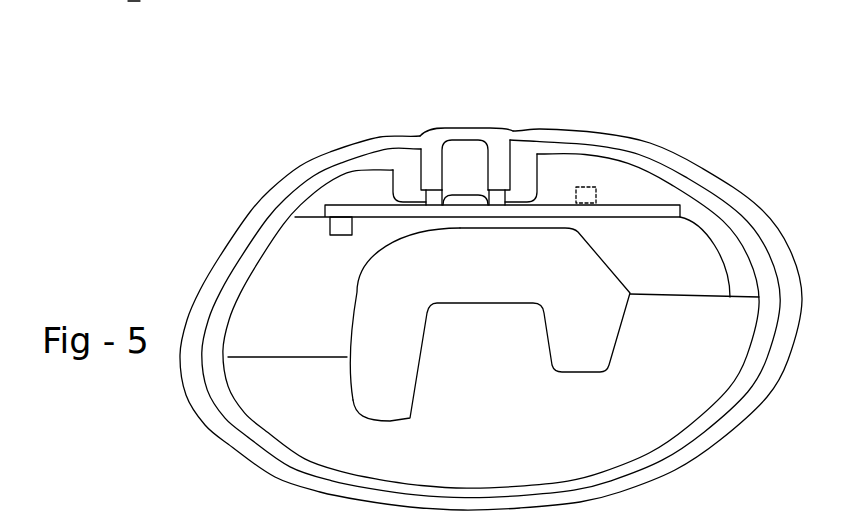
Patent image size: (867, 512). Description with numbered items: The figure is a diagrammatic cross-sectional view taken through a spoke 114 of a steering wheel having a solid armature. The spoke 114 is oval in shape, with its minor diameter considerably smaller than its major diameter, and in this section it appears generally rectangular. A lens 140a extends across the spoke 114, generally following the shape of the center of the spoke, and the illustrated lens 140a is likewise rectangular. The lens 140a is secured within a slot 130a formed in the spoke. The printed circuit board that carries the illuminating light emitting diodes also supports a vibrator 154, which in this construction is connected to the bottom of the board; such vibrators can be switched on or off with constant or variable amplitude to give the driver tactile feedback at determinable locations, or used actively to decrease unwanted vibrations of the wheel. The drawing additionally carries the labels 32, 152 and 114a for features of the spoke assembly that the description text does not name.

The housing shell 32 is at (229, 236).
The slot 130a is at (432, 160).
The lens 140a is at (455, 162).
The sensor dome 152 is at (480, 201).
The vibrator 154 is at (327, 227).
The spoke 114 is at (453, 324).
The insert side wall 114a is at (383, 327).